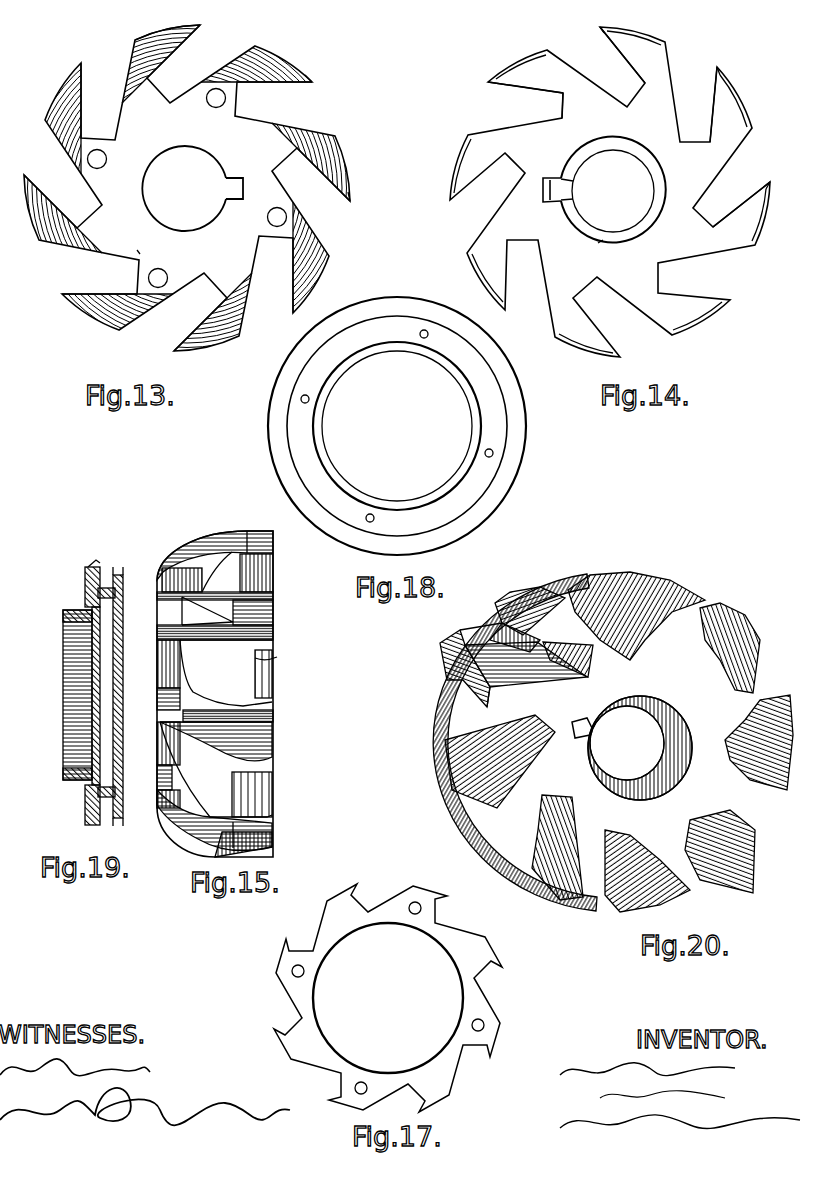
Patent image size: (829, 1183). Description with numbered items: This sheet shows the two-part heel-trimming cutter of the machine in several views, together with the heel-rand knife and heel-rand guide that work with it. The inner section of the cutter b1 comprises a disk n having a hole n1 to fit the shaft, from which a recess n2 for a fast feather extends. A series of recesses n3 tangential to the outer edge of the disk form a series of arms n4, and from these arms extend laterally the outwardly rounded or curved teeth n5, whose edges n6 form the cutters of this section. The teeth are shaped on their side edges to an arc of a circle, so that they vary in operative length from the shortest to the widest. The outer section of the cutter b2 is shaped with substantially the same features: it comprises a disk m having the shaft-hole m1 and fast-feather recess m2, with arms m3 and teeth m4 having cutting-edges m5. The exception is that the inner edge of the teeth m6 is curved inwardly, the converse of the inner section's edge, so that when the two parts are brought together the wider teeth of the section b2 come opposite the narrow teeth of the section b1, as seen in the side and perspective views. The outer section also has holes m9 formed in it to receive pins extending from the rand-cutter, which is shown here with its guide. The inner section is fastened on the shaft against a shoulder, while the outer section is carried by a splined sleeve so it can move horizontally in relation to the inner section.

In FIG. 13, the disk m is at (187, 188).
In FIG. 13, the shaft-hole m1 is at (184, 188).
In FIG. 13, the fast-feather recess m2 is at (240, 176).
In FIG. 13, the arms m3 is at (228, 73).
In FIG. 13, the teeth m4 is at (283, 50).
In FIG. 13, the cutting-edges m5 is at (313, 84).
In FIG. 13, the inner edge of the teeth m6 is at (268, 222).
In FIG. 13, the holes m9 is at (168, 270).
In FIG. 13, the outer section of the cutter b2 is at (141, 243).
In FIG. 15, the outer section of the cutter b2 is at (157, 641).
In FIG. 14, the disk n is at (610, 192).
In FIG. 14, the hole n1 is at (613, 190).
In FIG. 14, the recess for a fast feather n2 is at (552, 176).
In FIG. 14, the recesses n3 is at (527, 107).
In FIG. 14, the arms n4 is at (629, 139).
In FIG. 14, the teeth n5 is at (630, 38).
In FIG. 14, the edges n6 is at (780, 173).
In FIG. 14, the inner section of the cutter b1 is at (588, 252).
In FIG. 15, the inner section of the cutter b1 is at (274, 659).